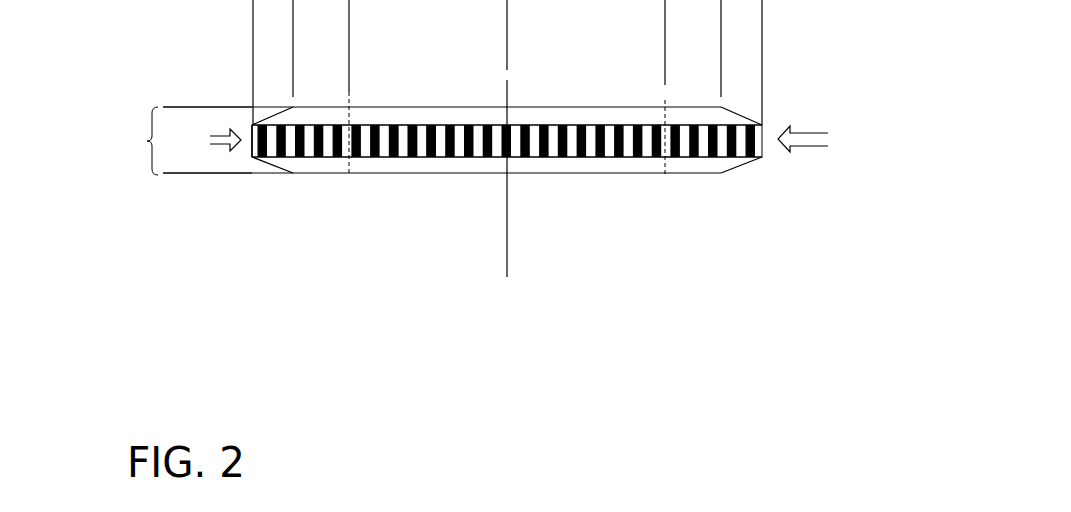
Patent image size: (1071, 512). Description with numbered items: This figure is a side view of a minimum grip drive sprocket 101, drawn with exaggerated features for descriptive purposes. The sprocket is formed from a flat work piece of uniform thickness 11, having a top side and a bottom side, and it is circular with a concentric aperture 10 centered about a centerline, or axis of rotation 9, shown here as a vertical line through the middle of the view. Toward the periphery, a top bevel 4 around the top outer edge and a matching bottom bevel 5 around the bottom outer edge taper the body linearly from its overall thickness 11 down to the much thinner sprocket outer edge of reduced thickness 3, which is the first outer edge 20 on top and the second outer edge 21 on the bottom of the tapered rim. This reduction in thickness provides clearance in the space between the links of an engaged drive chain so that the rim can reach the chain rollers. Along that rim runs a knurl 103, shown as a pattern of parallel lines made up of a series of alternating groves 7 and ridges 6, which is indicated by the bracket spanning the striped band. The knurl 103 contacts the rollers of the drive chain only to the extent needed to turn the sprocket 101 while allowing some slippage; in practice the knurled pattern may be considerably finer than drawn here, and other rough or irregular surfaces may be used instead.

The minimum grip drive sprocket 101 is at (738, 278).
The knurl 103 is at (488, 255).
The ridge 6 is at (400, 140).
The grove 7 is at (418, 140).
The first outer edge 20 is at (252, 127).
The second outer edge 21 is at (251, 158).
The thickness 11 is at (146, 141).
The sprocket outer edge of reduced thickness 3 is at (212, 140).
The aperture 10 is at (351, 88).
The top bevel 4 is at (747, 113).
The bottom bevel 5 is at (752, 162).
The axis of rotation 9 is at (507, 171).